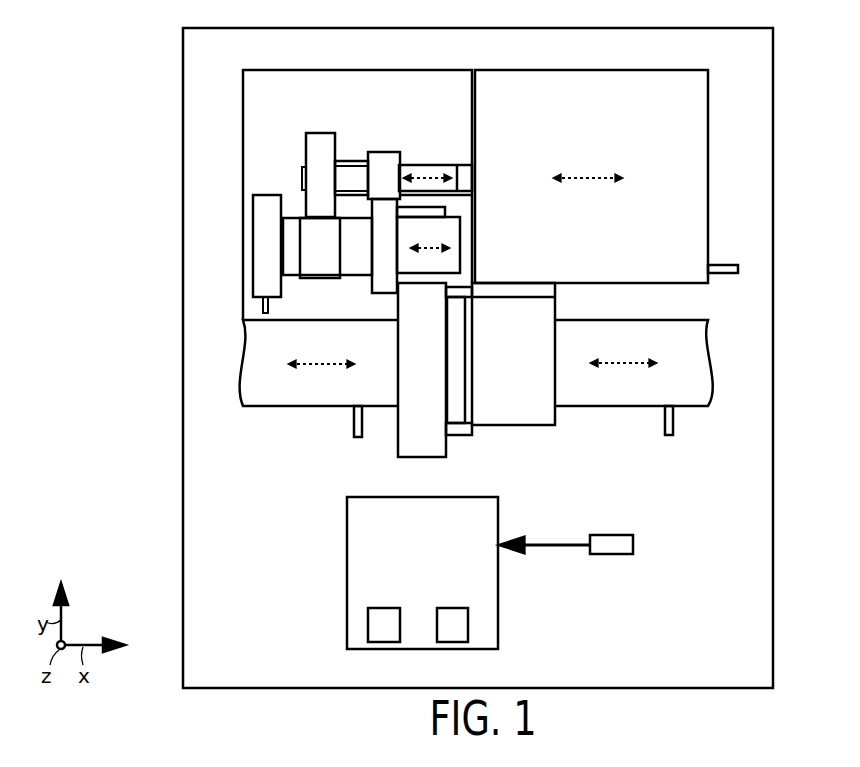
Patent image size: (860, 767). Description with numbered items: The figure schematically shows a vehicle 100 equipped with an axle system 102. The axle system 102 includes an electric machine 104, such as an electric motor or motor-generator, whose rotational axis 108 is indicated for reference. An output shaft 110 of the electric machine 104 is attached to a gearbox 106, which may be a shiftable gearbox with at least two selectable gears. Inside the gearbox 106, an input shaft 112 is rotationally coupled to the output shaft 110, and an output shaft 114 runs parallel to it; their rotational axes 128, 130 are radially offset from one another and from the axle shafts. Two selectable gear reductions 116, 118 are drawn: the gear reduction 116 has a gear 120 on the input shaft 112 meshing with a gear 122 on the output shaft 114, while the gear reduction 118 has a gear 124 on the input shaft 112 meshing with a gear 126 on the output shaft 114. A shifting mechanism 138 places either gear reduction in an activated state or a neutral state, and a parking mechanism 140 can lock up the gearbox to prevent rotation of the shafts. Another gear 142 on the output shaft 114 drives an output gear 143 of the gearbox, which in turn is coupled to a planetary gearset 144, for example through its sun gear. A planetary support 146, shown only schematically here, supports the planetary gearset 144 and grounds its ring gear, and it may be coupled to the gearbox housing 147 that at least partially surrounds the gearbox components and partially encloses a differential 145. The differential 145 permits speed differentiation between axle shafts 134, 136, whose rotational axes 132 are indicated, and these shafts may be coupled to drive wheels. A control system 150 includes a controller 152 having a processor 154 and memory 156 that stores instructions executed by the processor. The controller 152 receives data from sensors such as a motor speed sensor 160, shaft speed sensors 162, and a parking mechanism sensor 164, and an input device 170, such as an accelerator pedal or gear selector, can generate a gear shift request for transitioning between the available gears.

The vehicle 100 is at (189, 28).
The axle system 102 is at (262, 475).
The electric machine 104 is at (708, 108).
The gearbox 106 is at (262, 122).
The rotational axis of electric machine 108 is at (588, 177).
The output shaft of electric machine 110 is at (463, 178).
The input shaft 112 is at (425, 175).
The output shaft 114 is at (357, 273).
The gear reduction 116 is at (400, 178).
The gear reduction 118 is at (292, 126).
The gear 120 is at (388, 168).
The gear 122 is at (385, 283).
The gear 124 is at (320, 145).
The gear 126 is at (312, 272).
The rotational axis of input shaft 128 is at (428, 180).
The rotational axis of output shaft 130 is at (428, 247).
The rotational axes of axle shafts 132 is at (322, 363).
The axle shaft 134 is at (306, 407).
The axle shaft 136 is at (616, 407).
The shifting mechanism 138 is at (352, 165).
The parking mechanism 140 is at (266, 207).
The gear 142 is at (430, 370).
The output gear 143 is at (425, 450).
The planetary gearset 144 is at (463, 403).
The differential 145 is at (555, 413).
The planetary support 146 is at (460, 435).
The gearbox housing 147 is at (243, 165).
The control system 150 is at (270, 598).
The controller 152 is at (405, 601).
The processor 154 is at (368, 625).
The memory 156 is at (468, 625).
The motor speed sensor 160 is at (727, 265).
The shaft speed sensors 162 is at (362, 425).
The parking mechanism sensor 164 is at (263, 305).
The input device 170 is at (610, 535).